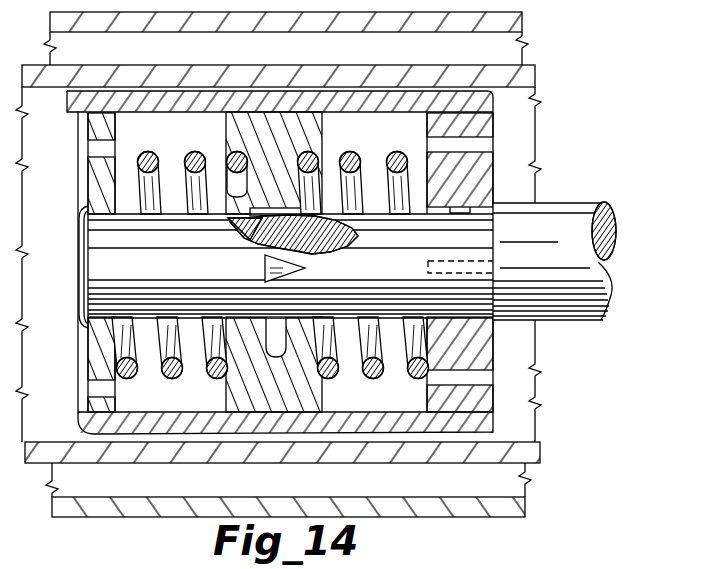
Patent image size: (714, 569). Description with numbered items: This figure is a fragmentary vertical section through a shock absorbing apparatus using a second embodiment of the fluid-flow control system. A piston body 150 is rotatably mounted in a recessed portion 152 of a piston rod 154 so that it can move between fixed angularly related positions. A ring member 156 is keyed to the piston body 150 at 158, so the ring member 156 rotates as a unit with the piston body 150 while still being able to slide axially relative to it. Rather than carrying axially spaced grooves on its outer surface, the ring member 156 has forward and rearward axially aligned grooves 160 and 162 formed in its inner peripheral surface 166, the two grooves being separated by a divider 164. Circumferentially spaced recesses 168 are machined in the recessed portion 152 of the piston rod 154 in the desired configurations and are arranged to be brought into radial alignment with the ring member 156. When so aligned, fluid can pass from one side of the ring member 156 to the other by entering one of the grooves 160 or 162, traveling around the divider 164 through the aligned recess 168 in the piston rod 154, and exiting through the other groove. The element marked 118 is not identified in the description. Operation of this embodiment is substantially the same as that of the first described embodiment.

The piston body 150 is at (333, 95).
The recessed portion 152 is at (385, 197).
The piston rod 154 is at (480, 290).
The ring member 156 is at (273, 168).
The key 158 is at (222, 113).
The forward groove 160 is at (345, 230).
The rearward groove 162 is at (240, 218).
The divider 164 is at (268, 238).
The inner peripheral surface 166 is at (300, 382).
The recesses 168 is at (305, 262).
The shaft 118 is at (460, 216).